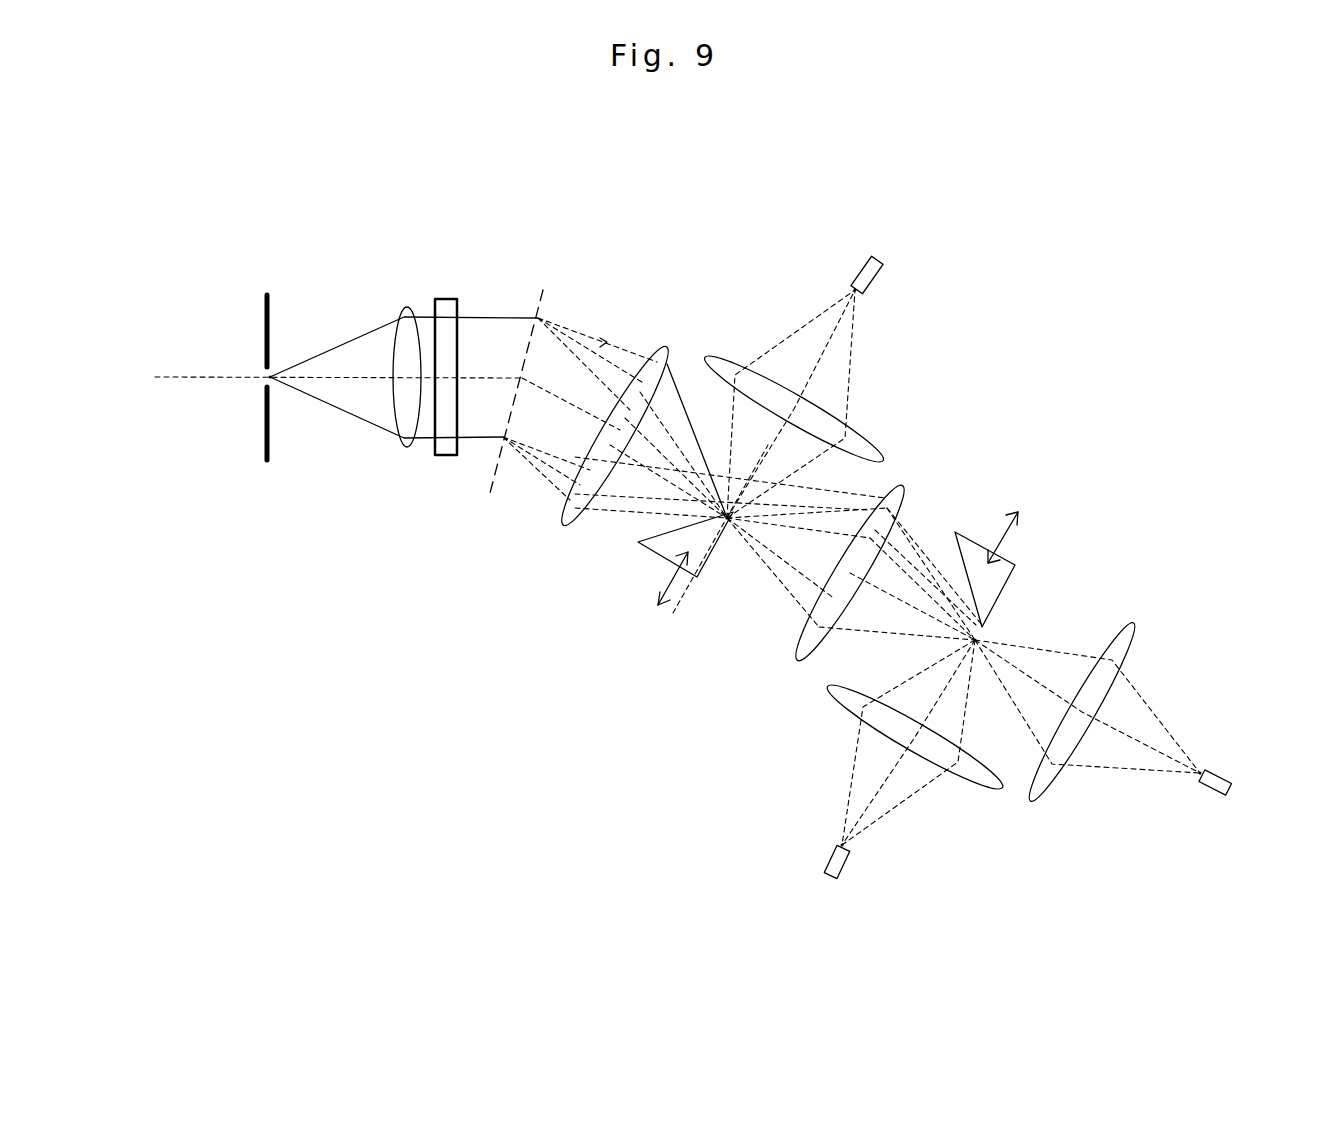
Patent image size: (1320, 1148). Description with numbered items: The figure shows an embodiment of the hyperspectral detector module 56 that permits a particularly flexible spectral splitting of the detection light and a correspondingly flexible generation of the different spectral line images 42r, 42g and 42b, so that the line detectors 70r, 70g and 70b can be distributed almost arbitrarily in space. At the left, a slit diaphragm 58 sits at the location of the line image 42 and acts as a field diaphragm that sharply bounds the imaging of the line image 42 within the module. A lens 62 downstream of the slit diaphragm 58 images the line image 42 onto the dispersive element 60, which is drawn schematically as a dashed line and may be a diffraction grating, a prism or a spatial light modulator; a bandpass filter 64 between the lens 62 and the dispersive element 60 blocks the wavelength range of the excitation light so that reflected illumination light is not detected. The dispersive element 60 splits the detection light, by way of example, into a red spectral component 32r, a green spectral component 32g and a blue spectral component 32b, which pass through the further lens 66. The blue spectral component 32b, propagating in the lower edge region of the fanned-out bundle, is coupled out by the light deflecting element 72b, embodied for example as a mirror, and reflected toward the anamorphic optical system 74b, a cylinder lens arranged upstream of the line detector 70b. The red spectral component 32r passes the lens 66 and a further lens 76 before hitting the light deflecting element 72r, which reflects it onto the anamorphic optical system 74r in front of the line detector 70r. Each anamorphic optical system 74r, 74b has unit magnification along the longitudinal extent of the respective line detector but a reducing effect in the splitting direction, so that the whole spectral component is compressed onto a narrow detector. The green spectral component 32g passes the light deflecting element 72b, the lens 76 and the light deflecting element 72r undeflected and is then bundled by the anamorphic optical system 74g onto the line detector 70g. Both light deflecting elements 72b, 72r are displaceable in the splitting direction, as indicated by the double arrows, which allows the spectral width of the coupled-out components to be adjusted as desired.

The detector module 56 is at (1140, 208).
The line image 42 is at (266, 374).
The slit diaphragm 58 is at (275, 332).
The lens 62 is at (407, 308).
The bandpass filter 64 is at (444, 457).
The dispersive element 60 is at (537, 310).
The further lens 66 is at (663, 347).
The light deflecting element 72b is at (672, 547).
The light deflecting element 72r is at (1018, 560).
The blue spectral component 32b is at (810, 323).
The red spectral component 32r is at (848, 783).
The green spectral component 32g is at (1172, 721).
The anamorphic optical system 74b is at (870, 445).
The anamorphic optical system 74r is at (998, 790).
The anamorphic optical system 74g is at (1030, 800).
The further lens 76 is at (903, 488).
The line image 42b is at (855, 290).
The line image 42r is at (842, 843).
The line image 42g is at (1202, 770).
The line detector 70b is at (880, 282).
The line detector 70r is at (848, 872).
The line detector 70g is at (1217, 797).